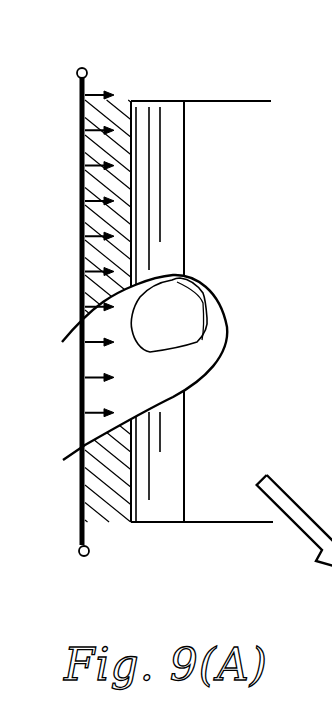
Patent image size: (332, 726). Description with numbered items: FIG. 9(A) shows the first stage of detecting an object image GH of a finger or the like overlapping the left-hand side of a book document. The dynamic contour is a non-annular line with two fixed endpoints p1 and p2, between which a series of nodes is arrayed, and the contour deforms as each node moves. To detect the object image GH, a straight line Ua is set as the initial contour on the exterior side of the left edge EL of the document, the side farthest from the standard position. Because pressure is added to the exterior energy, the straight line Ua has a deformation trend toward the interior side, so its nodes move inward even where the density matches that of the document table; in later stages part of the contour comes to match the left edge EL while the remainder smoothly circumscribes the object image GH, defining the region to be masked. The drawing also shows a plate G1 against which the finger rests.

The endpoint p1 is at (81, 67).
The endpoint p2 is at (85, 557).
The glass plate G1 is at (221, 107).
The object image GH is at (195, 368).
The left edge EL is at (131, 511).
The straight line Ua is at (83, 523).